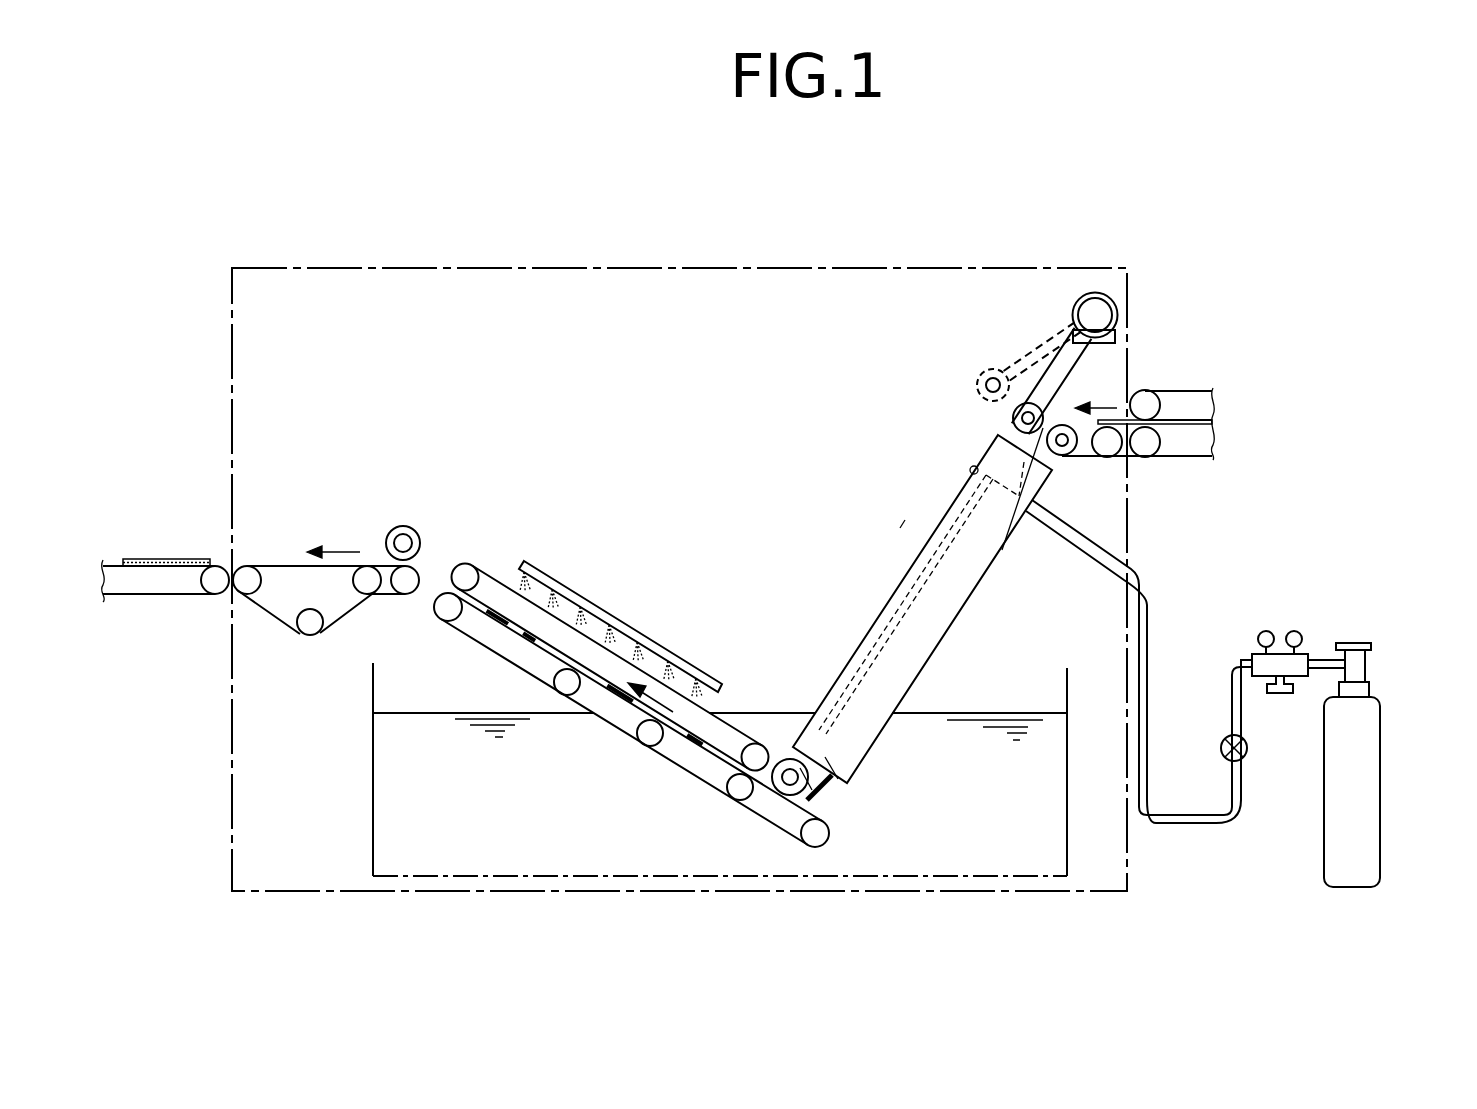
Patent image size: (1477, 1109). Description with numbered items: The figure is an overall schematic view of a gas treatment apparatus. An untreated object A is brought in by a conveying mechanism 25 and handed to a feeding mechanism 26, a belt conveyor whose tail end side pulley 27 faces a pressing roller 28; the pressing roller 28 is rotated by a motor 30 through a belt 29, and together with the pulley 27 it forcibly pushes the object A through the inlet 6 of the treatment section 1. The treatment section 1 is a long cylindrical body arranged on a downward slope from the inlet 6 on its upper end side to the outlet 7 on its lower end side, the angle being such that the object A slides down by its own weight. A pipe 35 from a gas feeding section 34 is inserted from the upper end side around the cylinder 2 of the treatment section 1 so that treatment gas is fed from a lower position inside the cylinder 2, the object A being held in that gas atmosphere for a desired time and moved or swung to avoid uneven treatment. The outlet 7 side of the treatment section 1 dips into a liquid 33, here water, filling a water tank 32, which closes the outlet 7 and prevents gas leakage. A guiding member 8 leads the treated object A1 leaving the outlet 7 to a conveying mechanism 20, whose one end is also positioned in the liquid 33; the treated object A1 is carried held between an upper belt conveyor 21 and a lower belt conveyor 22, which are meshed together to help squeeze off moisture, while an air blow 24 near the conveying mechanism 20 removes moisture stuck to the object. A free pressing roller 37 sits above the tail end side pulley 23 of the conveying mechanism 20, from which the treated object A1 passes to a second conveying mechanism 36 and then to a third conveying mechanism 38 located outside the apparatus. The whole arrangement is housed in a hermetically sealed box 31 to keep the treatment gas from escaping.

The treatment section 1 is at (978, 583).
The cylinder 2 is at (936, 647).
The inlet 6 is at (1085, 505).
The outlet 7 is at (858, 762).
The guiding member 8 is at (810, 793).
The conveying mechanism 20 is at (767, 824).
The upper belt conveyor 21 is at (493, 565).
The lower belt conveyor 22 is at (663, 760).
The tail end side pulley 23 is at (400, 596).
The air blow 24 is at (651, 636).
The conveying mechanism 25 is at (1185, 391).
The feeding mechanism 26 is at (1092, 457).
The pulley 27 is at (1063, 457).
The pressing roller 28 is at (980, 378).
The belt 29 is at (1093, 356).
The motor 30 is at (1095, 292).
The hermetically sealed box 31 is at (405, 262).
The water tank 32 is at (370, 832).
The liquid 33 is at (968, 808).
The gas feeding section 34 is at (1382, 777).
The pipe 35 is at (882, 604).
The second conveying mechanism 36 is at (272, 612).
The free pressing roller 37 is at (403, 525).
The third conveying mechanism 38 is at (160, 595).
The object to be treated A is at (1117, 405).
The treated object A1 is at (163, 556).